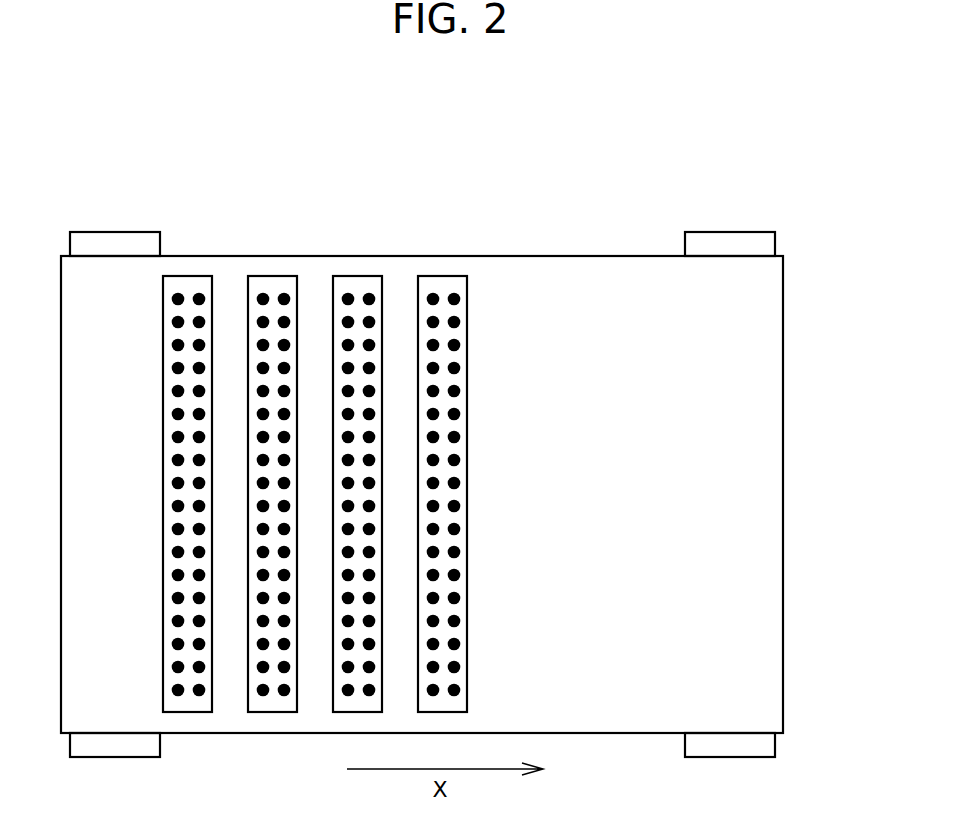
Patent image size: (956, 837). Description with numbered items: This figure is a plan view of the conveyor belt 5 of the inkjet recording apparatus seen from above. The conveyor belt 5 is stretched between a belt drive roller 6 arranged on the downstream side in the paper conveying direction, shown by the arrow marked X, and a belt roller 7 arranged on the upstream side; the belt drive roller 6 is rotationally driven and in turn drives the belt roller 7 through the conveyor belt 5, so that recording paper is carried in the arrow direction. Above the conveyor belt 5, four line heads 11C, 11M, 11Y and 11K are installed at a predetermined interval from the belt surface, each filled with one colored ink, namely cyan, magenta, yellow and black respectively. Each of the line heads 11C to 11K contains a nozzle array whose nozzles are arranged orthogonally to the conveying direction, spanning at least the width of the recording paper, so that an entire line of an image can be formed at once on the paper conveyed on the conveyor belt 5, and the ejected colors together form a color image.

The conveyor belt 5 is at (772, 669).
The belt drive roller 6 is at (730, 245).
The belt roller 7 is at (116, 244).
The line head 11C is at (194, 283).
The line head 11M is at (273, 283).
The line head 11Y is at (364, 283).
The line head 11K is at (449, 283).